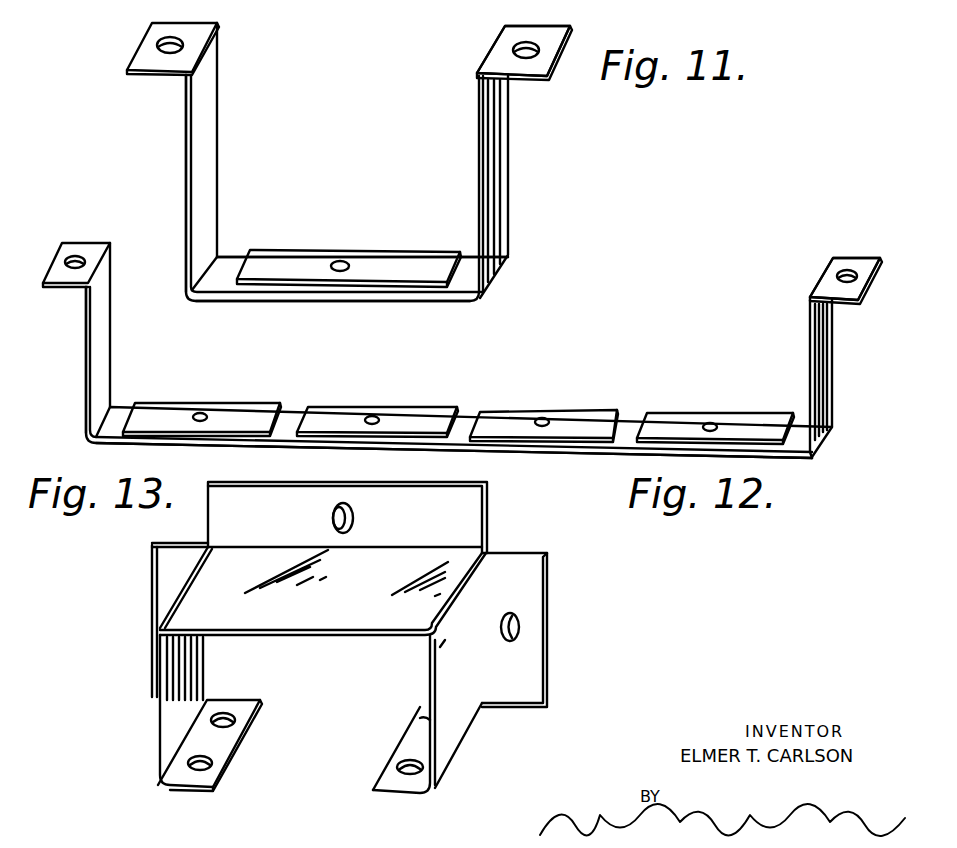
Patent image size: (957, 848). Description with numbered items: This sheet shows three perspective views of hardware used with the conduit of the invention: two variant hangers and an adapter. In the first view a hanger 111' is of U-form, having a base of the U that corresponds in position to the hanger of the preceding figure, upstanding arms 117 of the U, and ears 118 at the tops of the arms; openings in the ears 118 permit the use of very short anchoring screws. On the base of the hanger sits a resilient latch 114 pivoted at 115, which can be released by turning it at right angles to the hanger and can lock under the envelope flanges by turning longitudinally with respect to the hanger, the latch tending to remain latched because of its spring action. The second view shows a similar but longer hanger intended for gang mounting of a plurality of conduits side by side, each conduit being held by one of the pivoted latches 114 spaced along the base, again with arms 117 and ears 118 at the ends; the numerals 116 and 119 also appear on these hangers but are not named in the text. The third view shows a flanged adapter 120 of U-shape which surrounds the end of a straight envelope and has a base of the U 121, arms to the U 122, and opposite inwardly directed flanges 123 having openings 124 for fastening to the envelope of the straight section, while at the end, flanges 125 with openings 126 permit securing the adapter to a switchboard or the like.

In FIG. 11, the hanger 111' is at (359, 150).
In FIG. 11, the resilient latch 114 is at (418, 258).
In FIG. 12, the resilient latch 114 is at (433, 413).
In FIG. 11, the pivot 115 is at (370, 225).
In FIG. 12, the pivot 115 is at (373, 420).
In FIG. 11, the channel base 116 is at (315, 290).
In FIG. 12, the channel base 116 is at (633, 425).
In FIG. 11, the arms of the U 117 is at (207, 135).
In FIG. 12, the arms of the U 117 is at (100, 343).
In FIG. 11, the ears 118 is at (548, 38).
In FIG. 12, the ears 118 is at (860, 258).
In FIG. 11, the channel 119 is at (362, 128).
In FIG. 13, the flanged adapter 120 is at (322, 612).
In FIG. 13, the base of the U 121 is at (208, 578).
In FIG. 13, the arms to the U 122 is at (156, 733).
In FIG. 13, the inwardly directed flanges 123 is at (228, 738).
In FIG. 13, the openings 124 is at (205, 765).
In FIG. 13, the end flanges 125 is at (530, 585).
In FIG. 13, the openings 126 is at (520, 633).